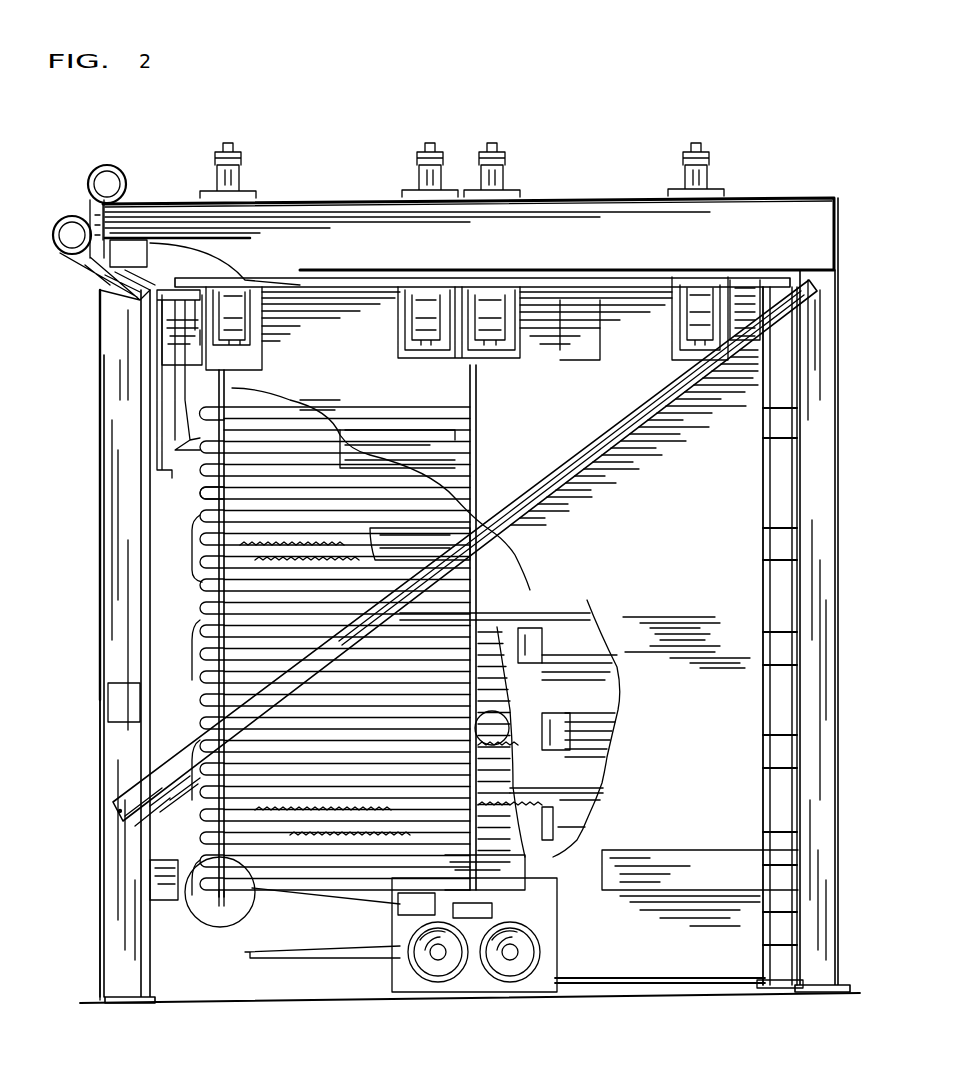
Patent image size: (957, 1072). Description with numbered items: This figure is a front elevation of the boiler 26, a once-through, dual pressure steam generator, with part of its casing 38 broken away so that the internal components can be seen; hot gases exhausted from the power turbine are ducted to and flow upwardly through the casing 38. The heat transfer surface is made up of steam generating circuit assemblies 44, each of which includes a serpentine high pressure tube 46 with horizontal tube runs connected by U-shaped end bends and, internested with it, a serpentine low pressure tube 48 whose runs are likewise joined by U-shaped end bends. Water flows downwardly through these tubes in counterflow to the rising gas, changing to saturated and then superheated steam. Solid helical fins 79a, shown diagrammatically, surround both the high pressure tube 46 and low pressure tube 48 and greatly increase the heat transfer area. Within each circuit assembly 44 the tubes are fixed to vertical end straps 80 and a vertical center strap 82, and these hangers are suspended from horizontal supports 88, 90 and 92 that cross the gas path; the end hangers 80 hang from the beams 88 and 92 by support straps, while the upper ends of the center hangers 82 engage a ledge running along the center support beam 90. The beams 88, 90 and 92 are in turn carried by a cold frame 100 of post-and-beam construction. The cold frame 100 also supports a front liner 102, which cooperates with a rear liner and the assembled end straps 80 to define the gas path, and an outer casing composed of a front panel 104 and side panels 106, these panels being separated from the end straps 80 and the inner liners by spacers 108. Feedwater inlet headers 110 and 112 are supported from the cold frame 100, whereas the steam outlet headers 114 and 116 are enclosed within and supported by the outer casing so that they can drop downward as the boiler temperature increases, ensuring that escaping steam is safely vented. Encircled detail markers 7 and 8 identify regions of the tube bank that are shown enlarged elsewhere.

The detail circle of FIG. 7 is at (215, 926).
The detail circle of FIG. 8 is at (505, 720).
The boiler 26 is at (100, 648).
The casing 38 is at (786, 512).
The steam generating circuit assembly 44 is at (178, 706).
The high pressure tube 46 is at (204, 615).
The low pressure tube 48 is at (190, 555).
The solid helical fins 79a is at (260, 545).
The vertical end strap 80 is at (204, 492).
The vertical center strap 82 is at (472, 618).
The horizontal support 88 is at (258, 320).
The center support beam 90 is at (442, 343).
The horizontal support 92 is at (672, 362).
The cold frame 100 is at (102, 522).
The front liner 102 is at (381, 489).
The front panel 104 is at (630, 728).
The side panel 106 is at (773, 606).
The spacer 108 is at (158, 400).
The feedwater inlet header 110 is at (126, 178).
The feedwater inlet header 112 is at (66, 216).
The steam outlet header 114 is at (420, 985).
The steam outlet header 116 is at (505, 990).